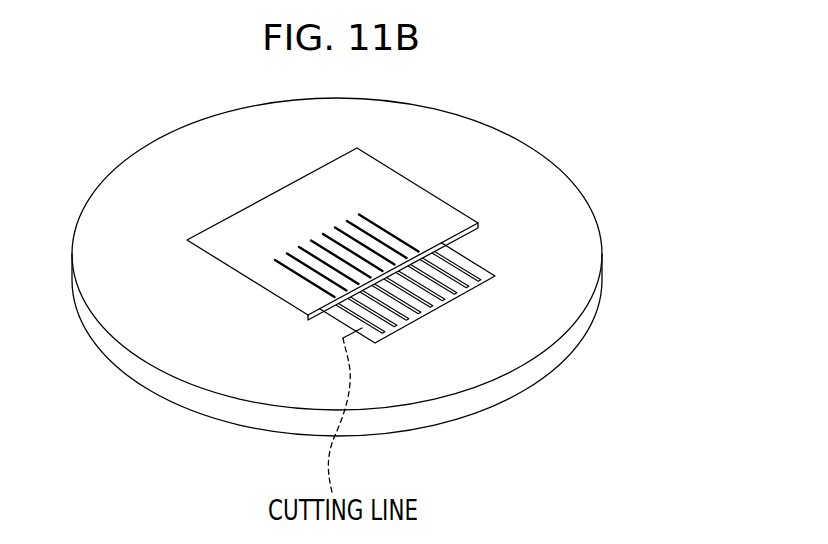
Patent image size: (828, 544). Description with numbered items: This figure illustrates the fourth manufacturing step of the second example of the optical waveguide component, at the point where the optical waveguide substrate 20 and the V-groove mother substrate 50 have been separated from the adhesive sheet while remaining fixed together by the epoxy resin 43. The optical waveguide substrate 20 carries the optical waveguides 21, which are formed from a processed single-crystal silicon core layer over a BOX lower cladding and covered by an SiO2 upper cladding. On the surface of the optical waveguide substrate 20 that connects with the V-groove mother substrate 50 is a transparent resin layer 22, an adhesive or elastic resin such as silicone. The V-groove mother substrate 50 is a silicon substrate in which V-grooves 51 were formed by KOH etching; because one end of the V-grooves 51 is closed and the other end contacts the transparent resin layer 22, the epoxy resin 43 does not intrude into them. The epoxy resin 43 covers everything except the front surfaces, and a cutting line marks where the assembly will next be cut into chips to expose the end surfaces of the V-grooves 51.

The optical waveguide substrate 20 is at (362, 172).
The optical waveguides 21 is at (377, 222).
The transparent resin layer 22 is at (437, 240).
The epoxy resin 43 is at (558, 256).
The V-groove mother substrate 50 is at (465, 258).
The V-grooves 51 is at (482, 284).